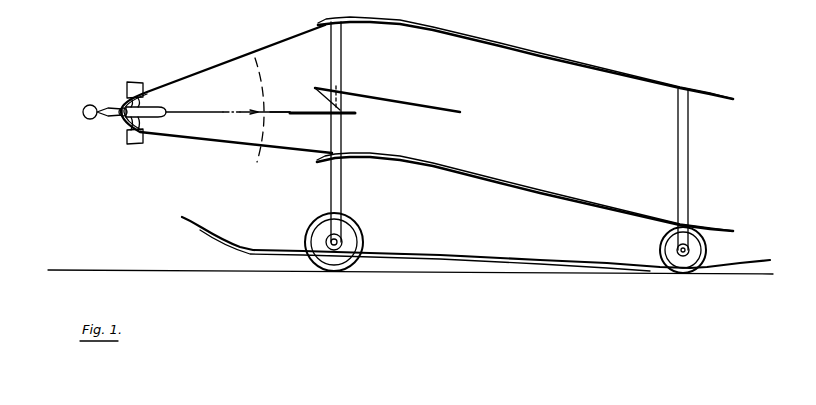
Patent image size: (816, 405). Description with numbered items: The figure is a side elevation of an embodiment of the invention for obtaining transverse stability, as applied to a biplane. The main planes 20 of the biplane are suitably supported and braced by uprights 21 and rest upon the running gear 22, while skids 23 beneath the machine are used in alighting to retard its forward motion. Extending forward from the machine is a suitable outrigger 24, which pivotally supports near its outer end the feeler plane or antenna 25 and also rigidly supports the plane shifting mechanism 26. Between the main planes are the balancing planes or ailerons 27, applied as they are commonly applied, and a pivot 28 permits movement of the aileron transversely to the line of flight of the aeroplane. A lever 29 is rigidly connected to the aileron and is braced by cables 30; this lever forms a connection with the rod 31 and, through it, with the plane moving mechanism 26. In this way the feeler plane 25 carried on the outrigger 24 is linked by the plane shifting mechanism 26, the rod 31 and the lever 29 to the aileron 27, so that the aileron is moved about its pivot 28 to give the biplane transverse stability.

The main planes 20 is at (434, 31).
The uprights 21 is at (342, 53).
The running gear 22 is at (358, 232).
The skids 23 is at (443, 253).
The outrigger 24 is at (231, 62).
The feeler plane or antenna 25 is at (207, 111).
The plane shifting mechanism 26 is at (156, 87).
The balancing planes or ailerons 27 is at (400, 99).
The pivot 28 is at (342, 90).
The lever 29 is at (341, 97).
The cables 30 is at (311, 95).
The rod 31 is at (292, 116).